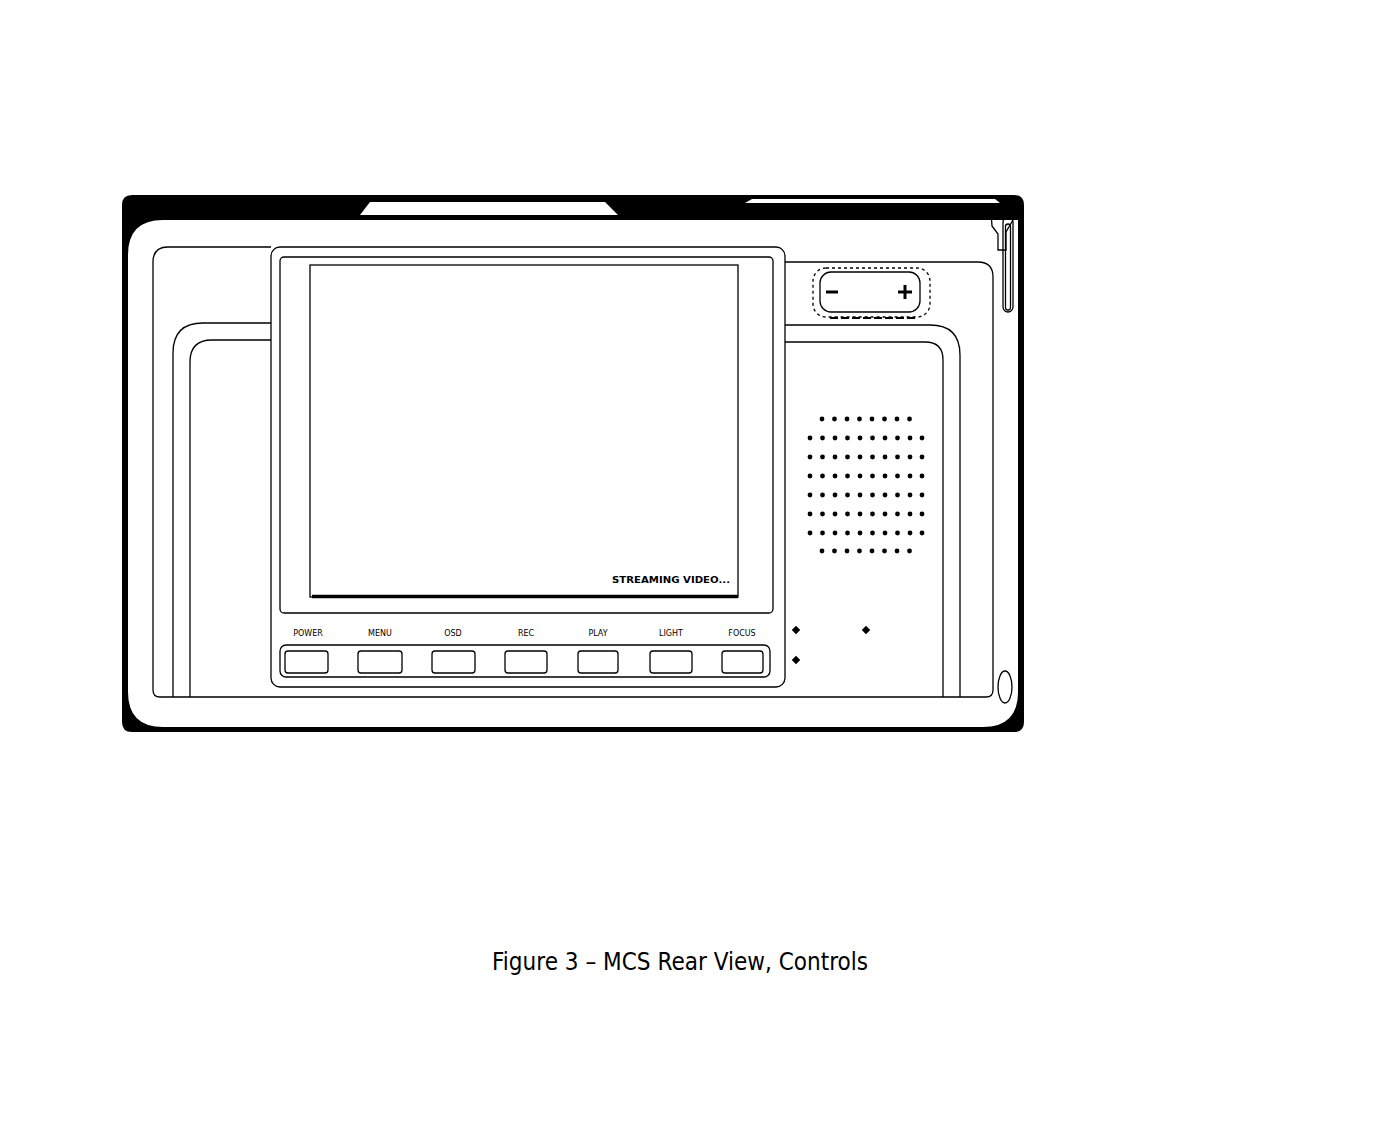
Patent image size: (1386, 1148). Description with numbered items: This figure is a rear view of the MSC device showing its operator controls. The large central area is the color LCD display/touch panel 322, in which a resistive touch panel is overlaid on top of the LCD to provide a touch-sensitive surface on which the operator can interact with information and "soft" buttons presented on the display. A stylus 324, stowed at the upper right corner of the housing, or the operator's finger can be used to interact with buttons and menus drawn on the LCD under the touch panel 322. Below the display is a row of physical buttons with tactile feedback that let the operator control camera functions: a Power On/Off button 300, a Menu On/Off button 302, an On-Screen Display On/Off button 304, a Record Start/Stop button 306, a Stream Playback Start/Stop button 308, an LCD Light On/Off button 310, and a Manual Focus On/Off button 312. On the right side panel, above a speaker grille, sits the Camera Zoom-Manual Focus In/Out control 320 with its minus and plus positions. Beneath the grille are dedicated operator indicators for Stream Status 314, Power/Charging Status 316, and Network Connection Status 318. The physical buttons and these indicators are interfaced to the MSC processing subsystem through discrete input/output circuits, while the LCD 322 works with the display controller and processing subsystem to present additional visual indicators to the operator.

The Power On/Off button 300 is at (301, 664).
The Menu On/Off button 302 is at (372, 661).
The On-Screen Display On/Off button 304 is at (455, 659).
The Record Start/Stop button 306 is at (531, 661).
The Stream Playback Start/Stop button 308 is at (598, 660).
The LCD Light On/Off button 310 is at (675, 661).
The Manual Focus On/Off button 312 is at (742, 661).
The Stream Status indicator 314 is at (863, 660).
The Power/Charging Status indicator 316 is at (953, 627).
The Network Connection Status indicator 318 is at (1051, 592).
The Camera Zoom-Manual Focus In/Out control 320 is at (900, 304).
The Color LCD Display/Touch Panel 322 is at (512, 449).
The stylus 324 is at (1023, 213).